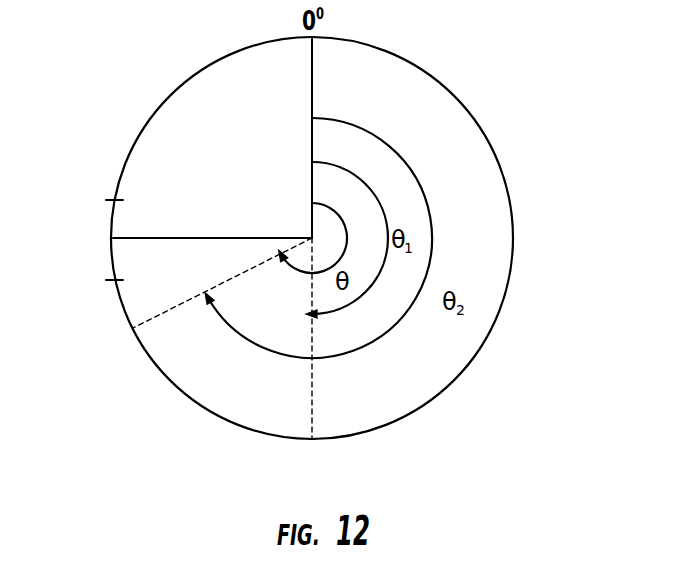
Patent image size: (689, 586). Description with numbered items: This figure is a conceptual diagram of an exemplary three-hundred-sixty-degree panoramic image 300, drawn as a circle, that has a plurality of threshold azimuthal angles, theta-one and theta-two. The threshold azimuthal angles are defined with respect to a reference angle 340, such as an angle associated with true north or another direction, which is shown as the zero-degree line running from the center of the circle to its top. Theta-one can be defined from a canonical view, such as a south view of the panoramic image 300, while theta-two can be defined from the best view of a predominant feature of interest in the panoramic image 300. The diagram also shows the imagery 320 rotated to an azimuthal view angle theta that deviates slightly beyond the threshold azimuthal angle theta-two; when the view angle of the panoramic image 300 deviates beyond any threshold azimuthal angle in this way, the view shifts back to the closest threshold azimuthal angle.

The panoramic image 300 is at (497, 157).
The imagery 320 is at (114, 222).
The reference angle 340 is at (312, 70).